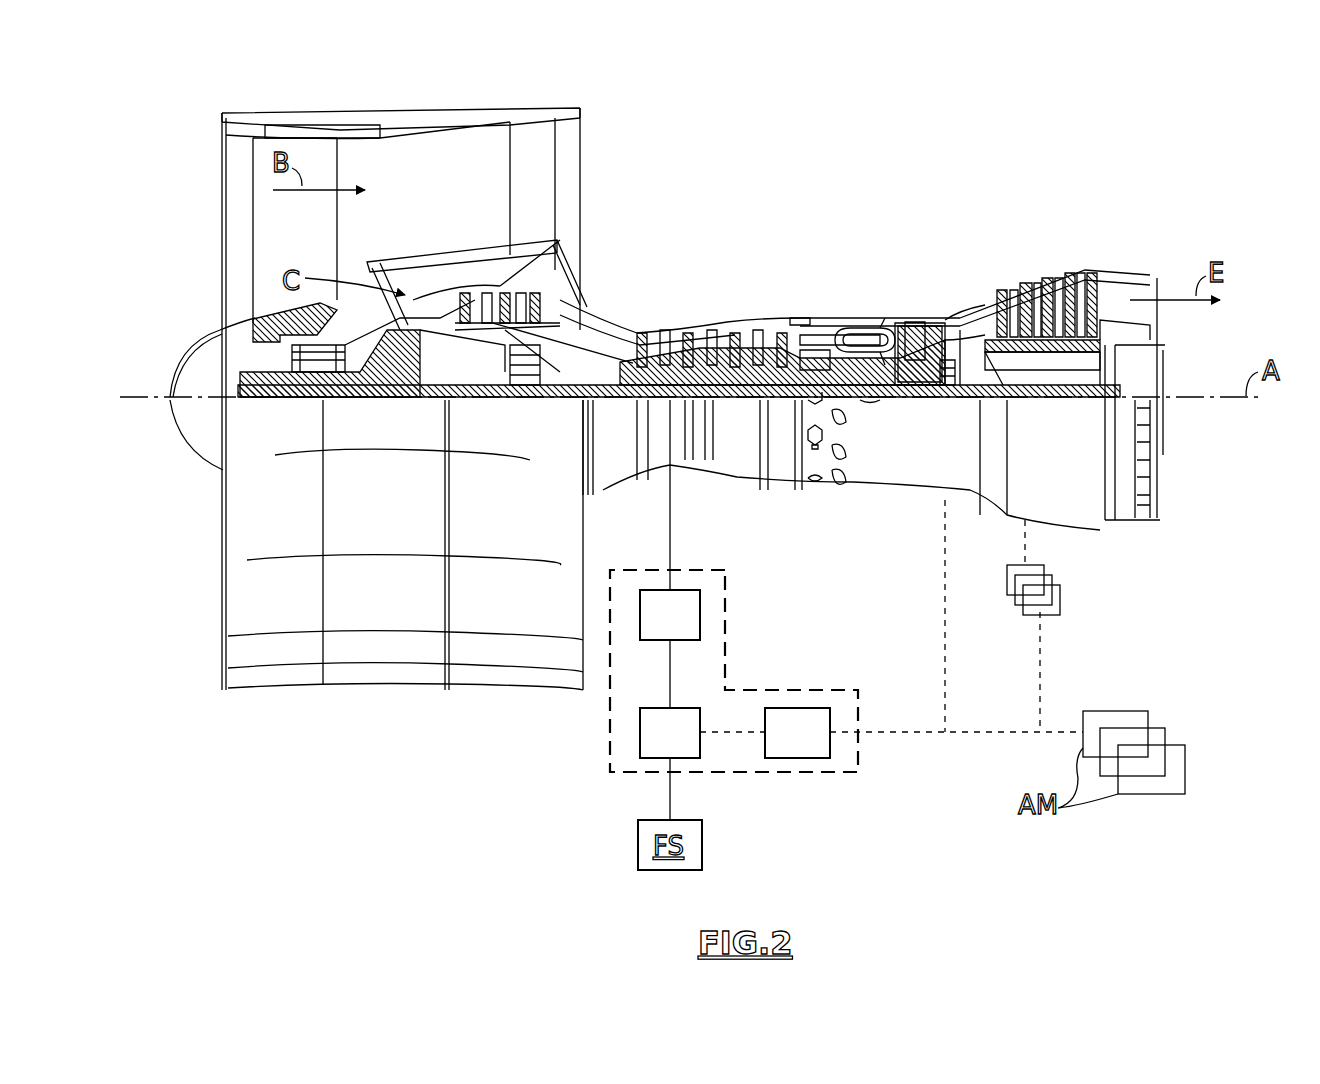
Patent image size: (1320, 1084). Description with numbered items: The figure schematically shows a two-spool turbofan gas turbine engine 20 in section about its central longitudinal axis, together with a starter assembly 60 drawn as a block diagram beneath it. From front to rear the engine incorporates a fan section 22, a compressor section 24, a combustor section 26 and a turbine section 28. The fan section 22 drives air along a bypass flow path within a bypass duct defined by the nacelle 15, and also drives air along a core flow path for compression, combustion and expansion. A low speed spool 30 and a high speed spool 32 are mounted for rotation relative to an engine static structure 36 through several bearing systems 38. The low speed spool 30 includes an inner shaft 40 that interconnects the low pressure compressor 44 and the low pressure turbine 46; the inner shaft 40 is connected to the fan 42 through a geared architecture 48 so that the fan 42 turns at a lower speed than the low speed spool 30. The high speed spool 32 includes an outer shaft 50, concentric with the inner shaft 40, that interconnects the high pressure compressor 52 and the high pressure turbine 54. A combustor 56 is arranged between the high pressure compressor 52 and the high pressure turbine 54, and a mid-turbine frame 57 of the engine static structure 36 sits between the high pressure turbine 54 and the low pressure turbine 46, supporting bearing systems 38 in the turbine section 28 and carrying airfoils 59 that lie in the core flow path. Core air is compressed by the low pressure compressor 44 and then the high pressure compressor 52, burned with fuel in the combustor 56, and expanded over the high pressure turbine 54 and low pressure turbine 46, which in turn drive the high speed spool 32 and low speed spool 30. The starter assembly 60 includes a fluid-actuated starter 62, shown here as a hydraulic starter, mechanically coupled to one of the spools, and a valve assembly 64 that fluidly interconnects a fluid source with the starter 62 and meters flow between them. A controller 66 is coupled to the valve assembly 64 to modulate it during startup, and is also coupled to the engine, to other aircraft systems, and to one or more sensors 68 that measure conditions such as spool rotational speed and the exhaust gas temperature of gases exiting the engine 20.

The nacelle 15 is at (404, 118).
The gas turbine engine 20 is at (860, 160).
The fan section 22 is at (376, 365).
The compressor section 24 is at (632, 308).
The combustor section 26 is at (852, 294).
The turbine section 28 is at (1000, 256).
The low speed spool 30 is at (743, 410).
The high speed spool 32 is at (787, 344).
The engine static structure 36 is at (780, 486).
The bearing systems 38 is at (541, 382).
The inner shaft 40 is at (604, 442).
The fan 42 is at (295, 230).
The low pressure compressor 44 is at (515, 300).
The low pressure turbine 46 is at (1048, 280).
The geared architecture 48 is at (408, 380).
The outer shaft 50 is at (865, 400).
The high pressure compressor 52 is at (718, 350).
The high pressure turbine 54 is at (921, 318).
The combustor 56 is at (860, 336).
The mid-turbine frame 57 is at (948, 306).
The airfoils 59 is at (987, 362).
The starter assembly 60 is at (734, 586).
The fluid-actuated starter 62 is at (670, 615).
The valve assembly 64 is at (670, 699).
The controller 66 is at (765, 733).
The sensors 68 is at (1044, 566).